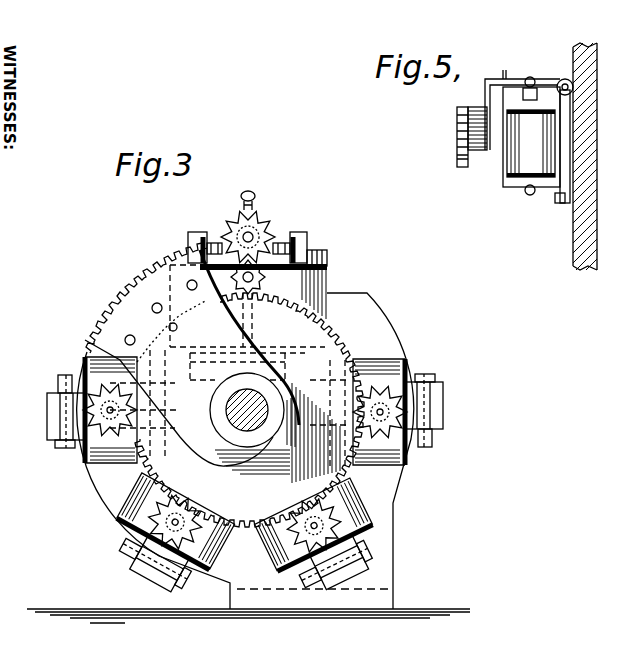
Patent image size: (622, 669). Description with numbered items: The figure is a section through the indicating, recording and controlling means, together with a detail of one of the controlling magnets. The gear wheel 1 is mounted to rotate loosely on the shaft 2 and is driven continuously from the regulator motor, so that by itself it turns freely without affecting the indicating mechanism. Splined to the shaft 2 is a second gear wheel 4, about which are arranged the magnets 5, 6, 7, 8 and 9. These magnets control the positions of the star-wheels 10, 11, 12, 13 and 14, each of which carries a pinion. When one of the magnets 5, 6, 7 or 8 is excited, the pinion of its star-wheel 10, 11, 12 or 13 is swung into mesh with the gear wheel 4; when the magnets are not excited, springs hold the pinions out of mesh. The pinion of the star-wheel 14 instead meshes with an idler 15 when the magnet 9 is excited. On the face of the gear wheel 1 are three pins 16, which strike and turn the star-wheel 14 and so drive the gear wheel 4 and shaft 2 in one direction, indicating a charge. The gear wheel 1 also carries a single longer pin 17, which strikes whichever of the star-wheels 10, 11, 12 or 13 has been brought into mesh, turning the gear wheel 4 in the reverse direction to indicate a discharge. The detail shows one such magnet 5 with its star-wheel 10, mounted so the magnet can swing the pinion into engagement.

In FIG. 3, the gear wheel 1 is at (215, 387).
In FIG. 3, the shaft 2 is at (265, 402).
In FIG. 3, the second gear wheel 4 is at (249, 410).
In FIG. 3, the magnet 5 is at (378, 363).
In FIG. 5, the magnet 5 is at (534, 140).
In FIG. 3, the magnet 6 is at (348, 507).
In FIG. 3, the magnet 7 is at (223, 551).
In FIG. 3, the magnet 8 is at (121, 463).
In FIG. 3, the magnet 9 is at (330, 292).
In FIG. 3, the star-wheel 10 is at (410, 400).
In FIG. 5, the star-wheel 10 is at (457, 143).
In FIG. 3, the star-wheel 11 is at (313, 543).
In FIG. 3, the star-wheel 12 is at (126, 540).
In FIG. 3, the star-wheel 13 is at (88, 404).
In FIG. 3, the star-wheel 14 is at (262, 224).
In FIG. 3, the idler 15 is at (323, 281).
In FIG. 3, the pins 16 is at (129, 334).
In FIG. 3, the pin 17 is at (178, 327).